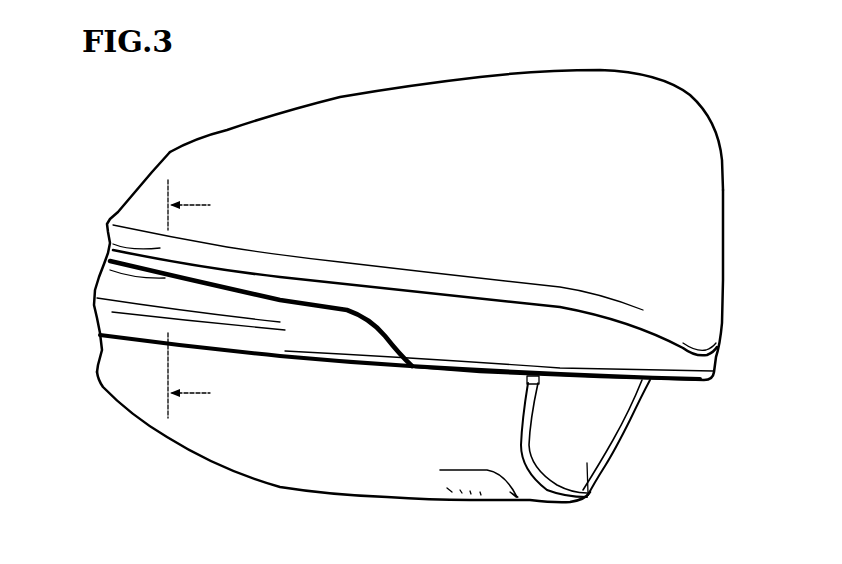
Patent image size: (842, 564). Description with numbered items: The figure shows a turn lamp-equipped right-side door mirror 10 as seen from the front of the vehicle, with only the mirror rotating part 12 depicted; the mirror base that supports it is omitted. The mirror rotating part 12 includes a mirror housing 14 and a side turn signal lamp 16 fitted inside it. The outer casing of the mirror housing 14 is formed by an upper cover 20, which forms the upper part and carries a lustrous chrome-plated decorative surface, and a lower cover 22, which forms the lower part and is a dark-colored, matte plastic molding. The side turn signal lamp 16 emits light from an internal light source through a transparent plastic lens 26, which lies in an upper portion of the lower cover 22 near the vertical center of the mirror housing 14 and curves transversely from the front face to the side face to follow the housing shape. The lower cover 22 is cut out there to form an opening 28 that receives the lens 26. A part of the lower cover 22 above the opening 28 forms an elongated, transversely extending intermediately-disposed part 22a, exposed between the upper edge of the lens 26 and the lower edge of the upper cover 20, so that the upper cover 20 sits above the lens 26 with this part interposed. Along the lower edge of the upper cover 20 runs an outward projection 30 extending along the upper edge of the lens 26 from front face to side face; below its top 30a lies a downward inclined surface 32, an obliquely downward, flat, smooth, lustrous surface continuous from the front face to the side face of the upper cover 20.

The door mirror 10 is at (725, 48).
The mirror rotating part 12 is at (736, 134).
The mirror housing 14 is at (696, 213).
The side turn signal lamp 16 is at (140, 338).
The upper cover 20 is at (482, 108).
The lower cover 22 is at (385, 457).
The intermediately-disposed part 22a is at (165, 272).
The lens 26 is at (113, 312).
The opening 28 is at (241, 356).
The projection 30 is at (132, 223).
The top of the projection 30a is at (246, 248).
The downward inclined surface 32 is at (112, 243).